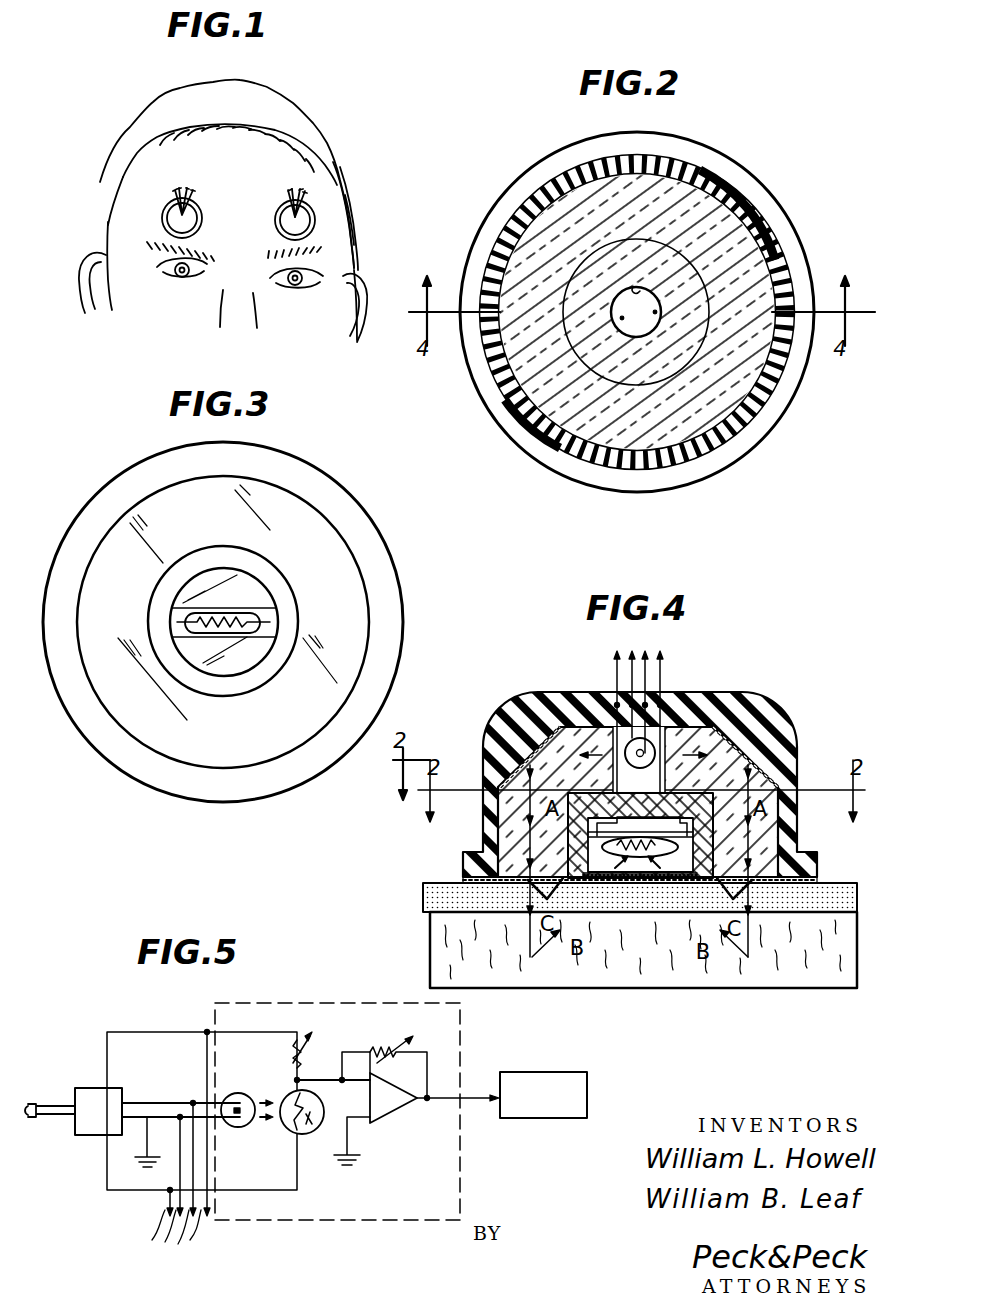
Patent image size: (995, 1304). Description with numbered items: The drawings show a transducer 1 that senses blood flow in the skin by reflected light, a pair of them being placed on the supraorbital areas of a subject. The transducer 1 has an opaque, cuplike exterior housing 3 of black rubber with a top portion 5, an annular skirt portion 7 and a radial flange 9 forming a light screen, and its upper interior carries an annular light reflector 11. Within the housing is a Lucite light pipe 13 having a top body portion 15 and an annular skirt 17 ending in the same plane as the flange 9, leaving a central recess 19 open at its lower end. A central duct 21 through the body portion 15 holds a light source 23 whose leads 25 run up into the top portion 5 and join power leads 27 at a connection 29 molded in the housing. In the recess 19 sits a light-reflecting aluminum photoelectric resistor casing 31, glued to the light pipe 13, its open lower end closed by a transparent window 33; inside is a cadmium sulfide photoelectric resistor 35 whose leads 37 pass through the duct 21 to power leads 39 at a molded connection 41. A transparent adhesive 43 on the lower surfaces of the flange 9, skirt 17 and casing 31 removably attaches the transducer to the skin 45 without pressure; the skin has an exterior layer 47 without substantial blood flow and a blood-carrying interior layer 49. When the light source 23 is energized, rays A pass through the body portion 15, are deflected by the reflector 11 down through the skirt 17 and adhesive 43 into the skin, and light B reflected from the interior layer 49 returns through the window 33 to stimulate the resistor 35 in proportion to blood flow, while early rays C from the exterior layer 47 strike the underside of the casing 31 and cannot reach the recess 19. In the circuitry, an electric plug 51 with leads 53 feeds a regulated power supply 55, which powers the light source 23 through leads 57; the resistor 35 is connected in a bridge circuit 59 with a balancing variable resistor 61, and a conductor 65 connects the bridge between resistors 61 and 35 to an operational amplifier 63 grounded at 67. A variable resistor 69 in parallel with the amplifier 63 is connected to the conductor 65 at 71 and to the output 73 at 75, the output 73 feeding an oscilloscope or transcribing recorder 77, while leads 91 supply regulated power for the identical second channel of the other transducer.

In FIG. 1, the transducer 1 is at (322, 227).
In FIG. 4, the transducer 1 is at (768, 682).
In FIG. 4, the exterior housing 3 is at (649, 784).
In FIG. 1, the top portion 5 is at (290, 228).
In FIG. 4, the top portion 5 is at (689, 692).
In FIG. 2, the annular skirt portion 7 is at (787, 277).
In FIG. 4, the annular skirt portion 7 is at (797, 807).
In FIG. 1, the radial flange 9 is at (308, 235).
In FIG. 2, the radial flange 9 is at (783, 228).
In FIG. 3, the radial flange 9 is at (378, 667).
In FIG. 4, the radial flange 9 is at (818, 856).
In FIG. 4, the annular light reflector 11 is at (792, 743).
In FIG. 4, the light pipe 13 is at (758, 905).
In FIG. 4, the top body portion 15 is at (712, 720).
In FIG. 3, the annular skirt 17 is at (288, 733).
In FIG. 4, the annular skirt 17 is at (798, 832).
In FIG. 4, the central recess 19 is at (679, 905).
In FIG. 2, the opening or duct 21 is at (637, 288).
In FIG. 4, the opening or duct 21 is at (696, 728).
In FIG. 4, the light source 23 is at (653, 764).
In FIG. 5, the light source 23 is at (242, 1128).
In FIG. 4, the leads 25 is at (613, 727).
In FIG. 1, the power leads 27 is at (298, 188).
In FIG. 4, the power leads 27 is at (645, 663).
In FIG. 4, the connection 29 is at (618, 704).
In FIG. 2, the photoelectric resistor casing 31 is at (660, 289).
In FIG. 3, the photoelectric resistor casing 31 is at (286, 638).
In FIG. 4, the photoelectric resistor casing 31 is at (698, 791).
In FIG. 4, the transparent window 33 is at (625, 882).
In FIG. 3, the photoelectric resistor 35 is at (253, 617).
In FIG. 4, the photoelectric resistor 35 is at (598, 883).
In FIG. 5, the photoelectric resistor 35 is at (310, 1135).
In FIG. 2, the leads 37 is at (621, 320).
In FIG. 4, the leads 37 is at (615, 777).
In FIG. 1, the power leads 39 is at (303, 197).
In FIG. 4, the power leads 39 is at (660, 675).
In FIG. 4, the connection 41 is at (617, 705).
In FIG. 4, the transparent adhesive 43 is at (818, 880).
In FIG. 4, the skin 45 is at (418, 938).
In FIG. 4, the exterior layer 47 is at (815, 900).
In FIG. 4, the interior layer 49 is at (790, 975).
In FIG. 5, the electric plug 51 is at (33, 1120).
In FIG. 5, the leads 53 is at (50, 1104).
In FIG. 5, the regulated power supply 55 is at (90, 1136).
In FIG. 5, the leads 57 is at (160, 1110).
In FIG. 5, the bridge circuit 59 is at (137, 1026).
In FIG. 5, the variable resistor 61 is at (312, 1050).
In FIG. 5, the operational amplifier 63 is at (398, 1102).
In FIG. 5, the conductor 65 is at (322, 1082).
In FIG. 5, the ground 67 is at (355, 1160).
In FIG. 5, the variable resistor 69 is at (390, 1043).
In FIG. 5, the connection 71 is at (356, 1066).
In FIG. 5, the output 73 is at (473, 1103).
In FIG. 5, the connection 75 is at (437, 1097).
In FIG. 5, the oscilloscope or transcribing recorder 77 is at (547, 1108).
In FIG. 5, the leads 91 is at (181, 1235).